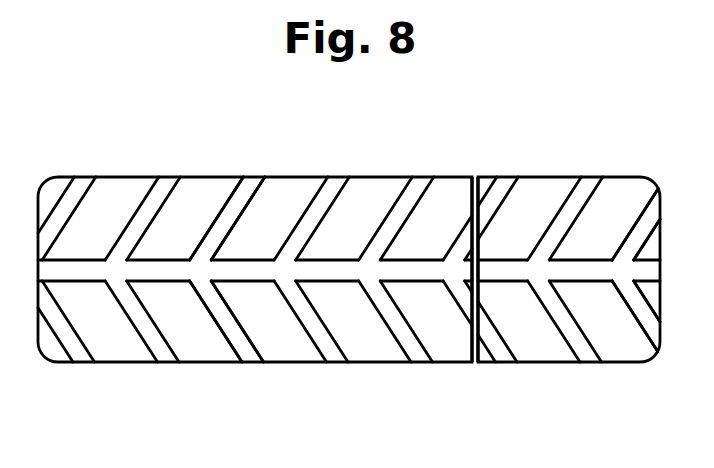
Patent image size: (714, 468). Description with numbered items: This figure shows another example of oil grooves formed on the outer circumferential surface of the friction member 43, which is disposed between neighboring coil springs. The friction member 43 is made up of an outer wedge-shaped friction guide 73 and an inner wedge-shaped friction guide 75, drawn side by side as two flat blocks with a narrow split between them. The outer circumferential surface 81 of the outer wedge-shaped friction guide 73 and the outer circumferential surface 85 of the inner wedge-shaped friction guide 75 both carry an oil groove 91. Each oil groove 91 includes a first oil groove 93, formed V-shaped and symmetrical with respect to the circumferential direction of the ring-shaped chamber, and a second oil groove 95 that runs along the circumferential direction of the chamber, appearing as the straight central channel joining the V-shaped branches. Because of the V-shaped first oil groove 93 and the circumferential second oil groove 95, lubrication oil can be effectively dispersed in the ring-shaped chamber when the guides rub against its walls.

The friction member 43 is at (395, 134).
The outer wedge-shaped friction guide 73 is at (395, 178).
The inner wedge-shaped friction guide 75 is at (543, 178).
The outer circumferential surface 81 is at (207, 356).
The outer circumferential surface 85 is at (558, 358).
The oil groove 91 is at (170, 132).
The first oil groove 93 is at (225, 213).
The second oil groove 95 is at (260, 263).